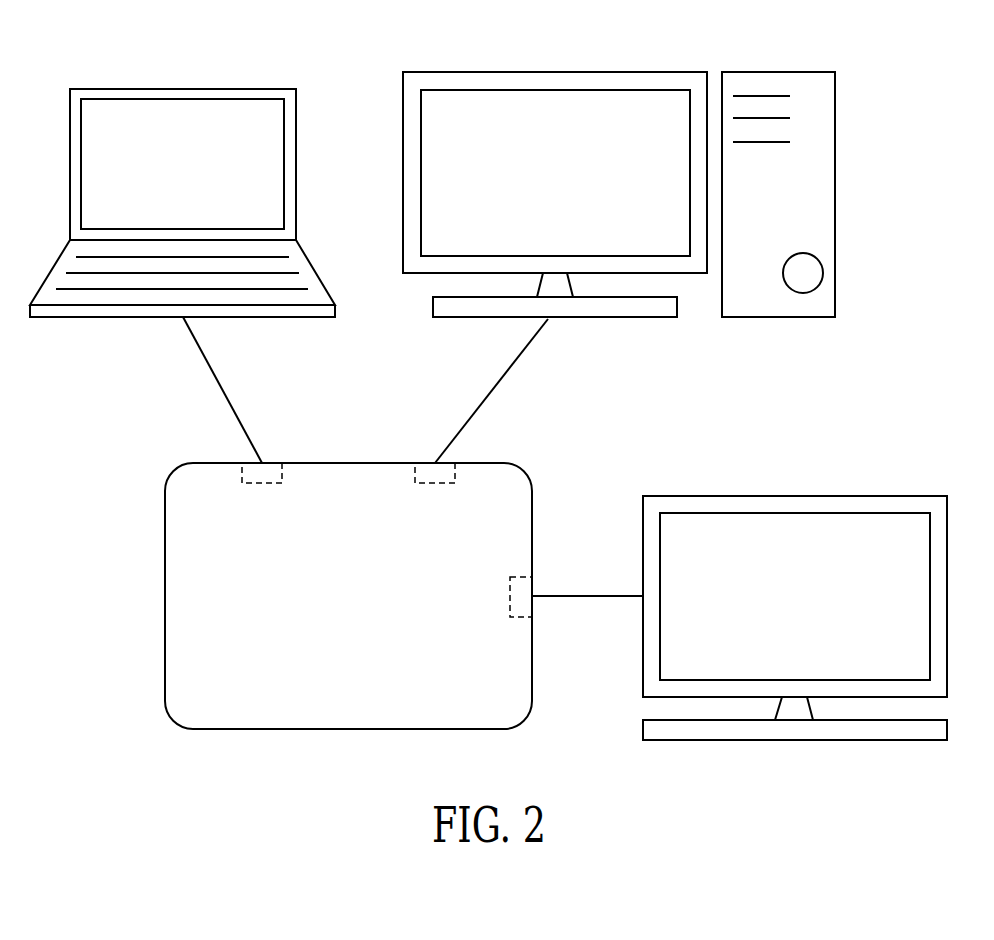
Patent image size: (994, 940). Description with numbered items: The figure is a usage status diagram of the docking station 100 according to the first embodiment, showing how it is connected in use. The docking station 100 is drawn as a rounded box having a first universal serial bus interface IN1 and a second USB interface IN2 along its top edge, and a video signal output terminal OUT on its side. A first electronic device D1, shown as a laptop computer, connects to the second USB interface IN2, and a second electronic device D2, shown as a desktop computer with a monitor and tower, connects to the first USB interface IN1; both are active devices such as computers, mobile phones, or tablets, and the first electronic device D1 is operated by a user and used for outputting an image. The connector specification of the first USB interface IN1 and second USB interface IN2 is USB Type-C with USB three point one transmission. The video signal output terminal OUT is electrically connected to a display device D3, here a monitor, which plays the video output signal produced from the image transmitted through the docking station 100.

The first electronic device D1 is at (178, 93).
The second electronic device D2 is at (551, 77).
The display device D3 is at (792, 502).
The docking station 100 is at (360, 713).
The first universal serial bus (USB) interface IN1 is at (427, 472).
The second USB interface IN2 is at (268, 472).
The video signal output terminal OUT is at (522, 587).